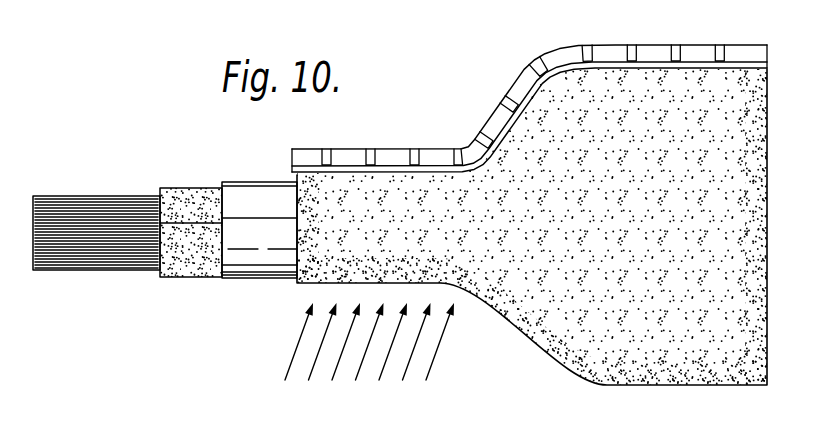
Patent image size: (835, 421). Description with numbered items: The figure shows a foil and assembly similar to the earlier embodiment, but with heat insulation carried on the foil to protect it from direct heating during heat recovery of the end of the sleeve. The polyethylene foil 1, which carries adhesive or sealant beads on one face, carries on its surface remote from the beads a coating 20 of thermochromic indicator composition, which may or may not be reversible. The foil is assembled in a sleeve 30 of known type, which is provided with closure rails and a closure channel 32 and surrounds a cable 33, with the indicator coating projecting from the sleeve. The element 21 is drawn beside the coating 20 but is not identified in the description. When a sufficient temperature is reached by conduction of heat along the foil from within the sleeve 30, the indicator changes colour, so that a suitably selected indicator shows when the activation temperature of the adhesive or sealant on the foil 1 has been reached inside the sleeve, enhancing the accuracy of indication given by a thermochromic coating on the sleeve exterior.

The polyethylene foil 1 is at (159, 182).
The coating of thermochromic indicator composition 20 is at (196, 190).
The connector sleeve 21 is at (255, 192).
The sleeve 30 is at (643, 108).
The closure channel 32 is at (394, 158).
The cable 33 is at (110, 255).